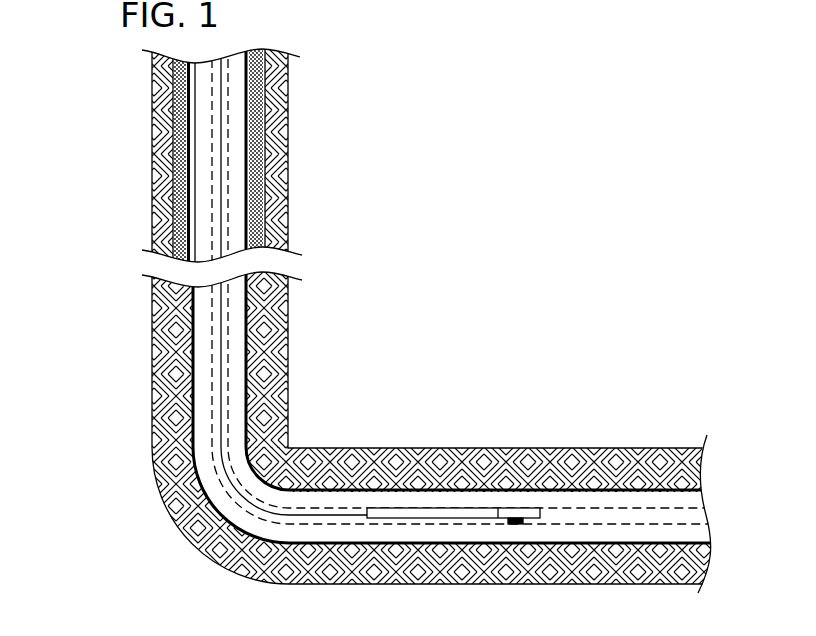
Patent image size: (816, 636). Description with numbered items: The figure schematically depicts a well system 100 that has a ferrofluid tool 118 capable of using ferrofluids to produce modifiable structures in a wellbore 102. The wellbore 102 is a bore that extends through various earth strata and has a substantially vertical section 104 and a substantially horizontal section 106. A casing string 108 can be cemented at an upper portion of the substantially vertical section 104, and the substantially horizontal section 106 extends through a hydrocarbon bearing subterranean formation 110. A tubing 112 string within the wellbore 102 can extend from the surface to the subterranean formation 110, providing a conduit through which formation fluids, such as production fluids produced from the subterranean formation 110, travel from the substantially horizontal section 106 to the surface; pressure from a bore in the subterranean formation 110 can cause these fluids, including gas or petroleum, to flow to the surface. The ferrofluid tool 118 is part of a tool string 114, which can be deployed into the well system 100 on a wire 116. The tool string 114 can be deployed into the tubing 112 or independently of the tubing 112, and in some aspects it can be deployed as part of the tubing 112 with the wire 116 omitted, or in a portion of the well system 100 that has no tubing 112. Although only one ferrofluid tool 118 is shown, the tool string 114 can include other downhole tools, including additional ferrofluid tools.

The well system 100 is at (106, 90).
The wellbore 102 is at (247, 370).
The substantially vertical section 104 is at (250, 323).
The substantially horizontal section 106 is at (612, 478).
The casing string 108 is at (260, 154).
The subterranean formation 110 is at (507, 312).
The tubing 112 is at (230, 405).
The tool string 114 is at (422, 516).
The wire 116 is at (345, 513).
The ferrofluid tool 118 is at (515, 519).